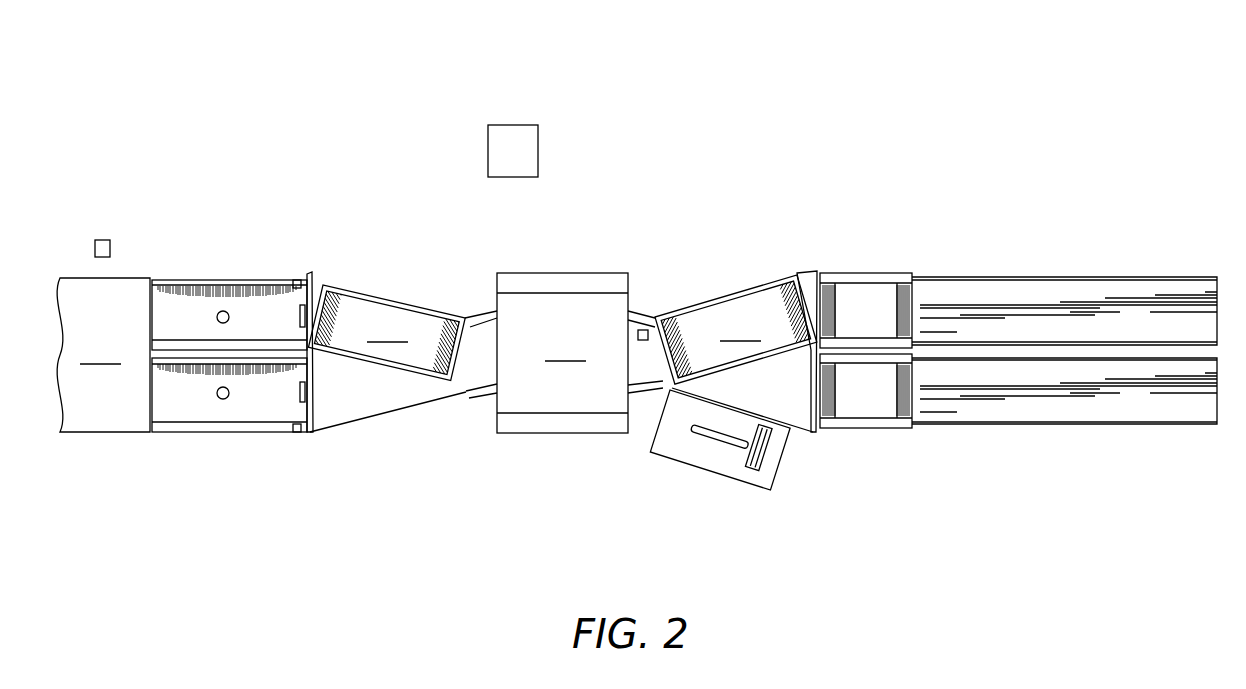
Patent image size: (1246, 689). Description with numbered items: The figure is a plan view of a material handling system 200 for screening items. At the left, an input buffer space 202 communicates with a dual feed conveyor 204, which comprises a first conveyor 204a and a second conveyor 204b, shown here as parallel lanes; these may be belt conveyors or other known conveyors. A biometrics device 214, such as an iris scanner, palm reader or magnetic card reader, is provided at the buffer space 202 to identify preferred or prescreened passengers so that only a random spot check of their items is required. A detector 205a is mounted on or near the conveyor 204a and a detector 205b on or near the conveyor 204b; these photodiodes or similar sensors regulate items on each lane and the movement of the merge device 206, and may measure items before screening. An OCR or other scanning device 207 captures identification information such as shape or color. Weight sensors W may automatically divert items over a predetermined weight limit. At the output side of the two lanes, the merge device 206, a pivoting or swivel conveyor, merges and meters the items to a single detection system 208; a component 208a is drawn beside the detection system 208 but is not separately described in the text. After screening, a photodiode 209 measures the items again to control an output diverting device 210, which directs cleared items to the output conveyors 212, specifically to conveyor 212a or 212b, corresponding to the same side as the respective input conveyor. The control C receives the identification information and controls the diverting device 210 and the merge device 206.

The material handling system 200 is at (763, 113).
The input buffer space 202 is at (103, 355).
The dual feed conveyor 204 is at (233, 379).
The first conveyor 204a is at (187, 317).
The second conveyor 204b is at (187, 393).
The detector 205a is at (297, 280).
The detector 205b is at (297, 432).
The merge device 206 is at (386, 332).
The OCR scanning device 207 is at (303, 310).
The detection system 208 is at (562, 353).
The station attachment / slide unit 208a is at (708, 460).
The photodiode 209 is at (643, 330).
The output diverting device 210 is at (736, 329).
The output conveyors 212 is at (1018, 393).
The output conveyor 212a is at (870, 313).
The output conveyor 212b is at (870, 388).
The biometrics device 214 is at (106, 238).
The weight sensors W is at (225, 311).
The control C is at (513, 151).